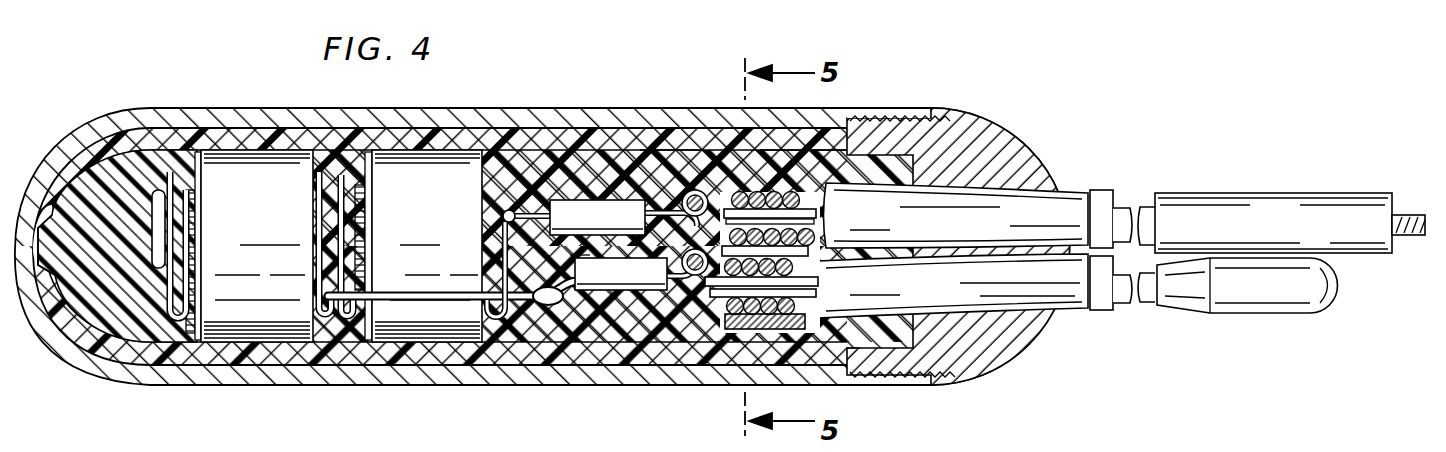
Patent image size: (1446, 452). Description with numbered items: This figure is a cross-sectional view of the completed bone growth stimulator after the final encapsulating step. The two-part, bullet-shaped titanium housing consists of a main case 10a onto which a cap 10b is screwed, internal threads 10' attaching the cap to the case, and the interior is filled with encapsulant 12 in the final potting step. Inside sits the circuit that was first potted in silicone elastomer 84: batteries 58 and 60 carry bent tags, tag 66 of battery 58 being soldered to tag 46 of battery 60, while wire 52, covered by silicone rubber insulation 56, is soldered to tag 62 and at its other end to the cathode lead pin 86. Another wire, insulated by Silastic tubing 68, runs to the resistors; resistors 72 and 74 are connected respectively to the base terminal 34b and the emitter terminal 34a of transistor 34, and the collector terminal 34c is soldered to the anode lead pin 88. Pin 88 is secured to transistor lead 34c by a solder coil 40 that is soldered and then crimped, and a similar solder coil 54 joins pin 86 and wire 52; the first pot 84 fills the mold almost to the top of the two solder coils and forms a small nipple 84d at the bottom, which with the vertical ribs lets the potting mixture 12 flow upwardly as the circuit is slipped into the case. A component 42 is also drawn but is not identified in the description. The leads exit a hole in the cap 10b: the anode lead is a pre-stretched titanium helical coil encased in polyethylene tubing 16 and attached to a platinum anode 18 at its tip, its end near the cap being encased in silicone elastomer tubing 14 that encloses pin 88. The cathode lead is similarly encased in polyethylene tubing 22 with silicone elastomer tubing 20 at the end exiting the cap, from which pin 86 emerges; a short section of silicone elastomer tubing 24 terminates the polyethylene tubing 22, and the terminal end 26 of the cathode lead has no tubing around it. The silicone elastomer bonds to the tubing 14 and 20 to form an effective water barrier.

The main case 10a is at (562, 110).
The cap 10b is at (1020, 140).
The internal threads 10' is at (902, 223).
The encapsulant 12 is at (132, 137).
The silicone elastomer tubing 14 is at (931, 276).
The polyethylene tubing 16 is at (1126, 307).
The platinum anode 18 is at (1306, 300).
The silicone elastomer tubing 20 is at (911, 222).
The polyethylene tubing 22 is at (1128, 206).
The silicone elastomer tubing section 24 is at (1222, 200).
The terminal end of cathode lead 26 is at (1406, 215).
The transistor 34 is at (580, 246).
The emitter terminal 34a is at (694, 190).
The base terminal 34b is at (681, 256).
The collector terminal 34c is at (818, 281).
The solder coil 40 is at (765, 330).
The coil spring contacts 42 is at (758, 306).
The tag 46 is at (348, 322).
The wire 52 is at (158, 190).
The solder coil 54 is at (768, 165).
The silicone rubber insulation 56 is at (684, 190).
The battery 58 is at (232, 229).
The battery 60 is at (407, 229).
The tag 62 is at (177, 318).
The tag 66 is at (324, 322).
The Silastic tubing insulation 68 is at (436, 297).
The resistor 72 is at (592, 287).
The resistor 74 is at (576, 230).
The first pot 84 is at (135, 316).
The nipple 84d is at (40, 244).
The cathode lead pin 86 is at (806, 213).
The anode lead pin 88 is at (820, 272).